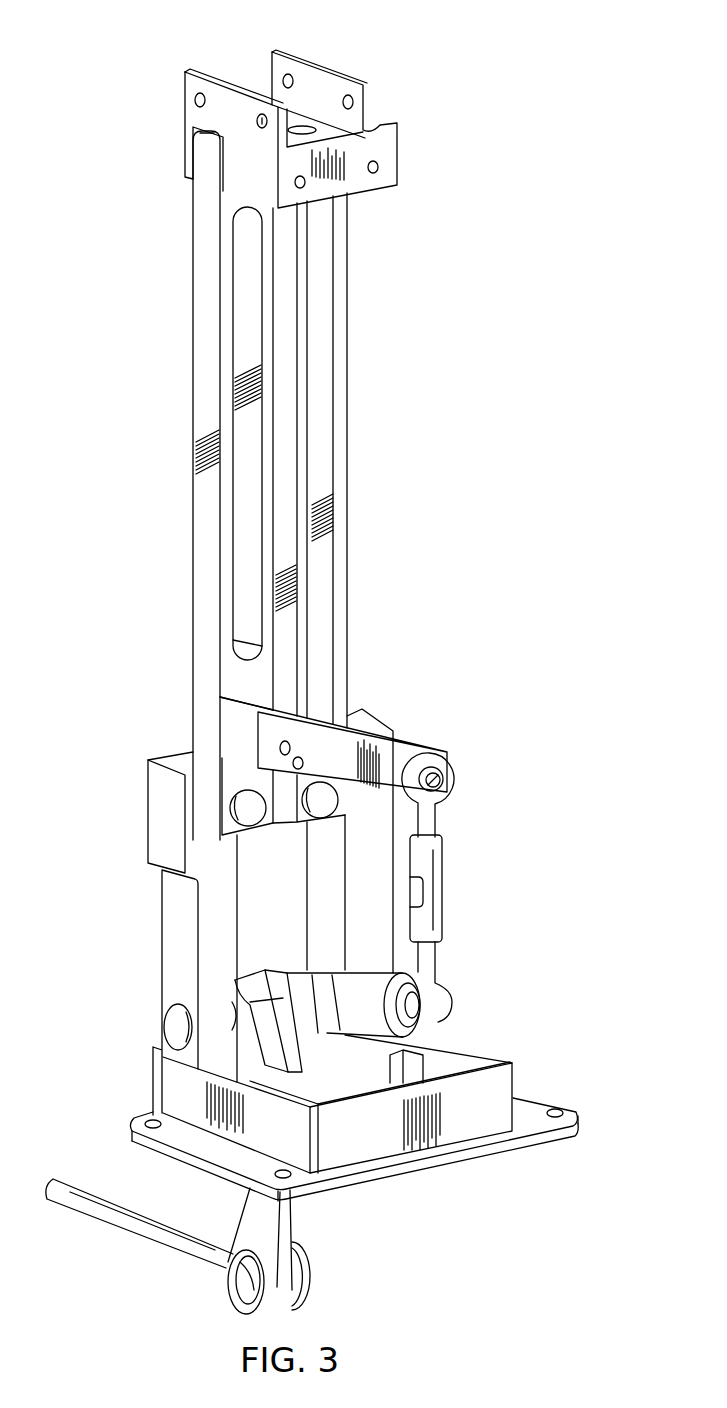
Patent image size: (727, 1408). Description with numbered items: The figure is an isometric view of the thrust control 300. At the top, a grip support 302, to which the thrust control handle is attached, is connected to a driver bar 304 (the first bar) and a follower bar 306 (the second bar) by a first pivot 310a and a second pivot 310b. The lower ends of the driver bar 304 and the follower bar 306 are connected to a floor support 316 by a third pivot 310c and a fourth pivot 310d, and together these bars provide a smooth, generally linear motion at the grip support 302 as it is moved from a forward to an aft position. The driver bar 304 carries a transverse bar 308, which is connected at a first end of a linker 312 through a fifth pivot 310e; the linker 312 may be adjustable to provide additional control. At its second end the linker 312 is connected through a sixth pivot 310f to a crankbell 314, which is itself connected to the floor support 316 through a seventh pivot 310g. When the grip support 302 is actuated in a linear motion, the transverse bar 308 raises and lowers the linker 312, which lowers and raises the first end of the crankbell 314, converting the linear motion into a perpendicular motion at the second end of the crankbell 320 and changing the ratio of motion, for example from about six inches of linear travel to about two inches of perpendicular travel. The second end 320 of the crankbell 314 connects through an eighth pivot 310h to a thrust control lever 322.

The thrust control 300 is at (368, 50).
The grip support 302 is at (398, 156).
The driver bar 304 is at (194, 322).
The follower bar 306 is at (347, 383).
The transverse bar 308 is at (417, 744).
The first pivot 310a is at (163, 141).
The second pivot 310b is at (222, 56).
The third pivot 310c is at (246, 816).
The fourth pivot 310d is at (322, 800).
The fifth pivot 310e is at (436, 782).
The sixth pivot 310f is at (427, 1007).
The seventh pivot 310g is at (172, 1026).
The eighth pivot 310h is at (257, 1288).
The linker 312 is at (442, 890).
The crankbell 314 is at (287, 972).
The floor support 316 is at (538, 1108).
The second end of the crankbell 320 is at (296, 1213).
The thrust control lever 322 is at (135, 1236).